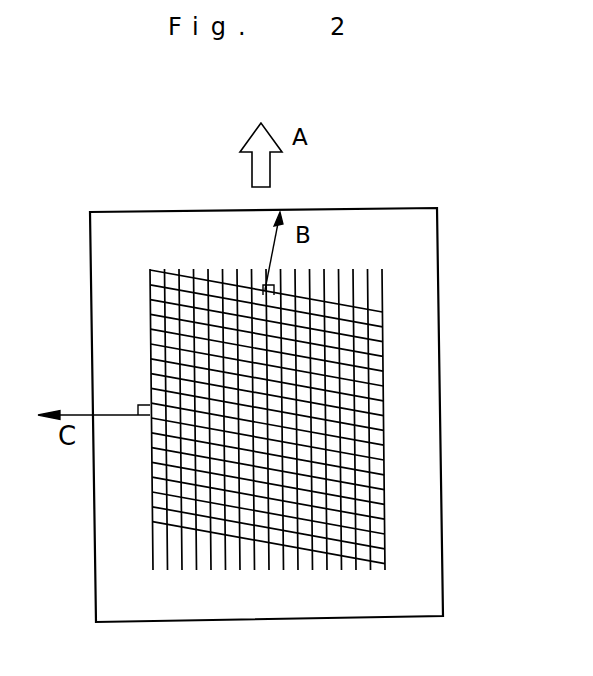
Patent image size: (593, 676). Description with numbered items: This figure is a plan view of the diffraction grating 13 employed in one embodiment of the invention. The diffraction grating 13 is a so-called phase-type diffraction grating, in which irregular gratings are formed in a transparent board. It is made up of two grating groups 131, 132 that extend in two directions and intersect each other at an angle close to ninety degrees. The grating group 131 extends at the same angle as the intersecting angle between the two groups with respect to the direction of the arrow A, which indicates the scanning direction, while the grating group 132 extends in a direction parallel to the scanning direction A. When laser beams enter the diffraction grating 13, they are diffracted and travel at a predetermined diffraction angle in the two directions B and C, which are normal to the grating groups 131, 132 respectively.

The diffraction grating 13 is at (413, 238).
The grating group 131 is at (183, 271).
The grating group 132 is at (380, 393).